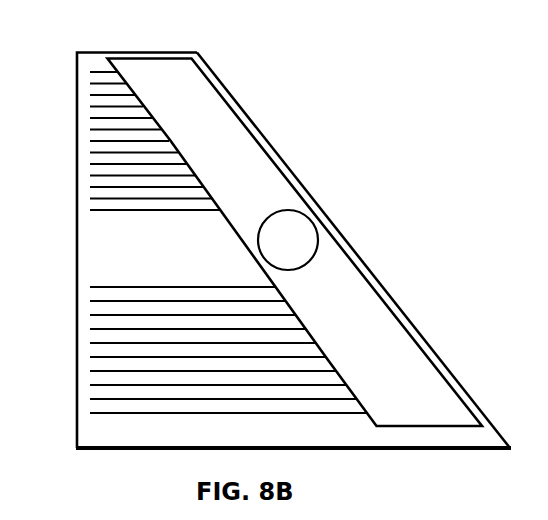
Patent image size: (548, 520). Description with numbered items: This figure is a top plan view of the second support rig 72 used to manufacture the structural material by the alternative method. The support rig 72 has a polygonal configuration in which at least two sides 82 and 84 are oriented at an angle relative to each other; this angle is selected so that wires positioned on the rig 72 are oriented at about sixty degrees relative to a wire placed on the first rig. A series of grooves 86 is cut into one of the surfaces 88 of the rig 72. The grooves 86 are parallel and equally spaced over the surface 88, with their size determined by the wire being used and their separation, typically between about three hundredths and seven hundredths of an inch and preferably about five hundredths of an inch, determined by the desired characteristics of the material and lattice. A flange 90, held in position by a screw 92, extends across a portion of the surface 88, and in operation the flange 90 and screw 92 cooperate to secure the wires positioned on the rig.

The support rig 72 is at (268, 47).
The side 82 is at (387, 451).
The side 84 is at (424, 320).
The grooves 86 is at (96, 397).
The surface 88 is at (170, 256).
The flange 90 is at (246, 168).
The screw 92 is at (297, 224).